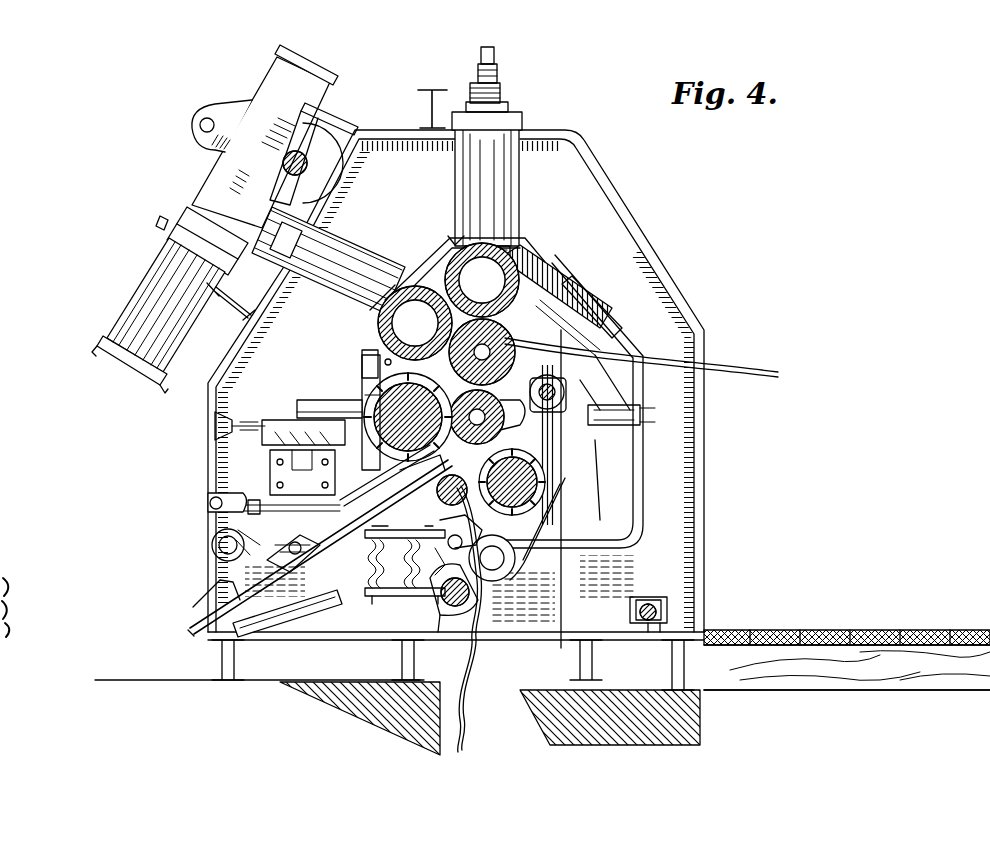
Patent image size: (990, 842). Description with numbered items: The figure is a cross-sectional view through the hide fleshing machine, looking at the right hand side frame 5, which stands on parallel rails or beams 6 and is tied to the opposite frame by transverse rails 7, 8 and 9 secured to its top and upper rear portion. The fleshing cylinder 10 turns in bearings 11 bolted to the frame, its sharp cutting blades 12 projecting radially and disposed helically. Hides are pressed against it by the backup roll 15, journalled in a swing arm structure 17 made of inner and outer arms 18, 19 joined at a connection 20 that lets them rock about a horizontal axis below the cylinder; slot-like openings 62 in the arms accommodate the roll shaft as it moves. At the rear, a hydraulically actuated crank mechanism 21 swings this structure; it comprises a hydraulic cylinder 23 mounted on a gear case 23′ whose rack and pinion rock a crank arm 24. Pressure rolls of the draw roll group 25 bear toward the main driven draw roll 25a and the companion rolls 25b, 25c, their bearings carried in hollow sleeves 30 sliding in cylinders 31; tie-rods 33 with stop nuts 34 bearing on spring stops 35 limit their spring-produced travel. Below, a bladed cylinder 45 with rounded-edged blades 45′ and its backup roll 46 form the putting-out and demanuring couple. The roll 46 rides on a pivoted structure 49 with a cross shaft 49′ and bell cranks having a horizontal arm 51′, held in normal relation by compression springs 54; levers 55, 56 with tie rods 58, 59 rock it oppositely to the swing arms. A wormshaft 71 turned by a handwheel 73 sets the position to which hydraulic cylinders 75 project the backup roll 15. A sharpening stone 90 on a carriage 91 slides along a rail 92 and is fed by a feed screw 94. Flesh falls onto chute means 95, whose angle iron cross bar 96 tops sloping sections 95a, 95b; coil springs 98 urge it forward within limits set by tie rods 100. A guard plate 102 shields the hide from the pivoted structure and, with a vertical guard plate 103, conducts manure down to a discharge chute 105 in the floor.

The right hand side frame 5 is at (692, 442).
The rails or beams 6 is at (220, 660).
The transverse rail 7 is at (420, 102).
The transverse rail 8 is at (332, 128).
The transverse rail 9 is at (232, 308).
The fleshing cylinder 10 is at (370, 397).
The bearings 11 is at (360, 354).
The cutting blades 12 is at (360, 380).
The backup roll 15 is at (505, 433).
The swing arm structure 17 is at (640, 508).
The inner arm 18 is at (578, 462).
The outer arm 19 is at (570, 290).
The connection 20 is at (512, 578).
The hydraulically actuated crank mechanism 21 is at (225, 100).
The hydraulic cylinder 23 is at (160, 284).
The gear case 23′ is at (282, 62).
The crank arm 24 is at (210, 148).
The roller assembly 25 is at (402, 262).
The main driven draw roll 25a is at (505, 322).
The roller 25b is at (436, 298).
The roller 25c is at (500, 262).
The hollow sleeves 30 is at (410, 278).
The cylinders 31 is at (498, 184).
The tie-rods 33 is at (495, 52).
The stop nuts 34 is at (498, 72).
The spring stops 35 is at (501, 95).
The bladed cylinder 45 is at (550, 490).
The blades 45′ is at (528, 565).
The backup roll 46 is at (414, 466).
The pivoted structure 49 is at (408, 604).
The shaft 49′ is at (440, 600).
The horizontal arm 51′ is at (370, 596).
The compression springs 54 is at (438, 536).
The lever 55 is at (270, 540).
The lever 56 is at (218, 520).
The tie rods 58 is at (368, 550).
The tie rods 59 is at (262, 505).
The slot-like openings 62 is at (567, 404).
The wormshaft 71 is at (556, 388).
The handwheel 73 is at (615, 330).
The hydraulic cylinders 75 is at (648, 413).
The sharpening stone 90 is at (298, 406).
The carriage 91 is at (268, 442).
The rail 92 is at (272, 460).
The feed screw 94 is at (255, 422).
The chute means 95 is at (340, 528).
The sloping section 95a is at (410, 480).
The lower sloping section 95b is at (262, 596).
The angle iron cross bar 96 is at (455, 475).
The coil springs 98 is at (368, 566).
The tie rods 100 is at (375, 526).
The guard plate 102 is at (468, 640).
The guard plate 103 is at (565, 520).
The discharge chute 105 is at (540, 710).